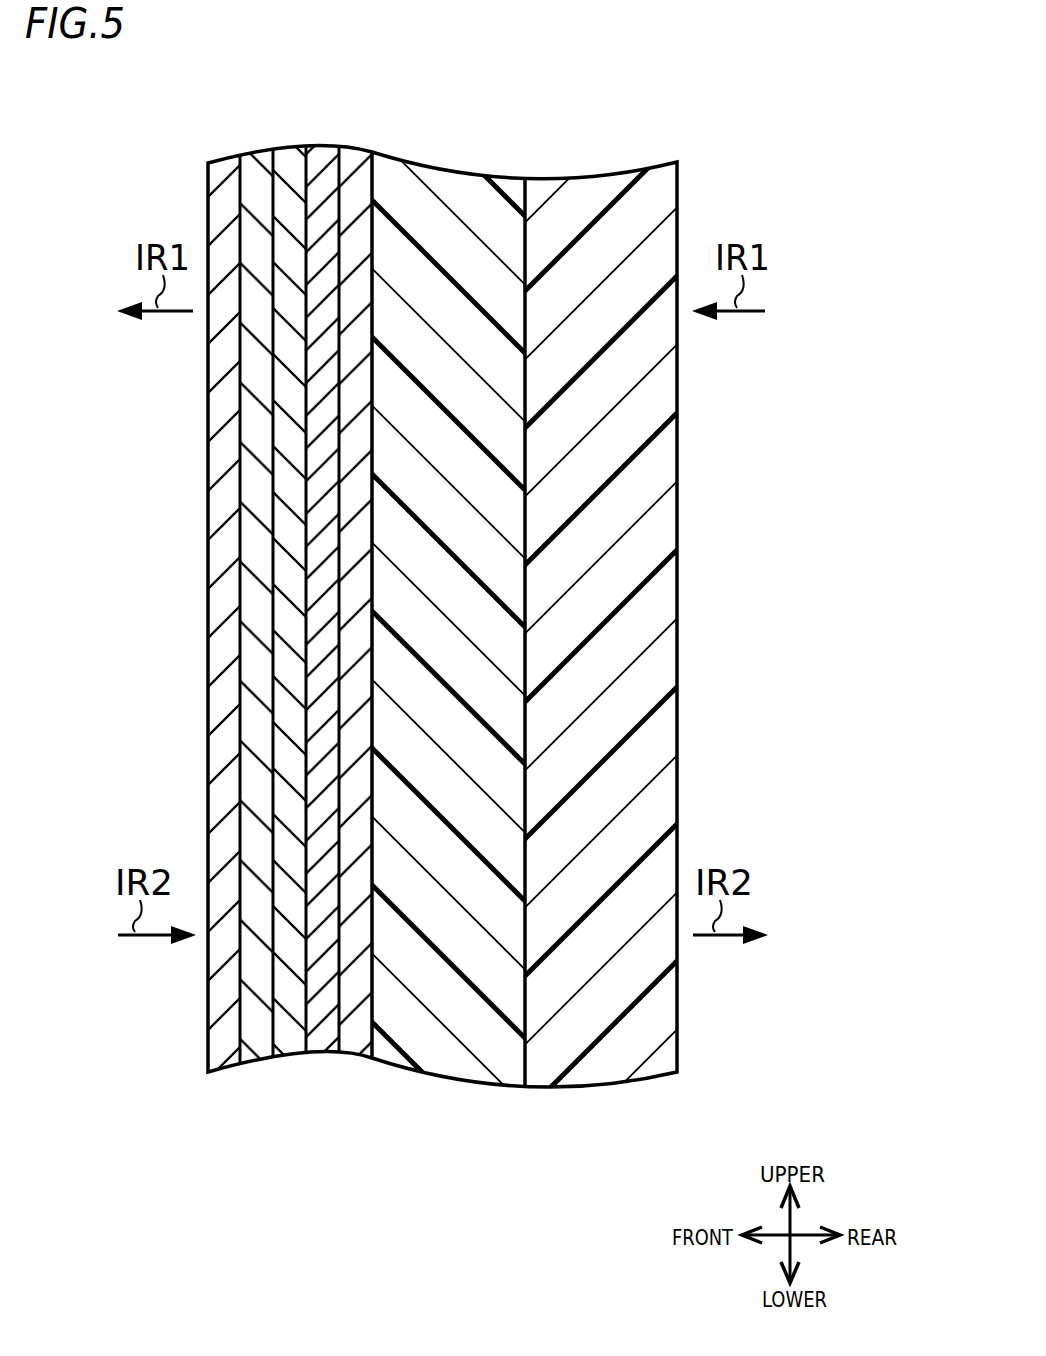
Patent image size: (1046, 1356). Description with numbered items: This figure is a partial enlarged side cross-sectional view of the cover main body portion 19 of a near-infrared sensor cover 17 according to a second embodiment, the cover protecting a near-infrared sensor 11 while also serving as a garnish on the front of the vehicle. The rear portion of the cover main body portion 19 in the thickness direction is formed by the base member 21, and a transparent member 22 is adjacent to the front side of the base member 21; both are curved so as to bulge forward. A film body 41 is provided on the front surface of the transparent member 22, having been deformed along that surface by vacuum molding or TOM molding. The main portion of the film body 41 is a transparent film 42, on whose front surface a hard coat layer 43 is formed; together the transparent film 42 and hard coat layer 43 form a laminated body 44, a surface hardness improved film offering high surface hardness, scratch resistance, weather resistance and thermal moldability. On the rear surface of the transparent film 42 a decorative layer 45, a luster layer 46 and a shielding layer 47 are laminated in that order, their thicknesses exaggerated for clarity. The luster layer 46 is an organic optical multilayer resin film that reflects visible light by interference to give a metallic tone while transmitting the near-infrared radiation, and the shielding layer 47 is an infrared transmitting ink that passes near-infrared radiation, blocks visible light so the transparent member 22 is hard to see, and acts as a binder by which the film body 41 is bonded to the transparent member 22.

The cover main body portion 19 is at (158, 172).
The near-infrared sensor cover 17 is at (416, 685).
The near-infrared sensor 11 is at (416, 685).
The base member 21 is at (600, 190).
The transparent member 22 is at (443, 173).
The film body 41 is at (393, 1215).
The transparent film 42 is at (247, 1063).
The hard coat layer 43 is at (227, 1073).
The laminated body 44 is at (278, 1153).
The decorative layer 45 is at (278, 1063).
The luster layer 46 is at (317, 1060).
The shielding layer 47 is at (350, 1060).